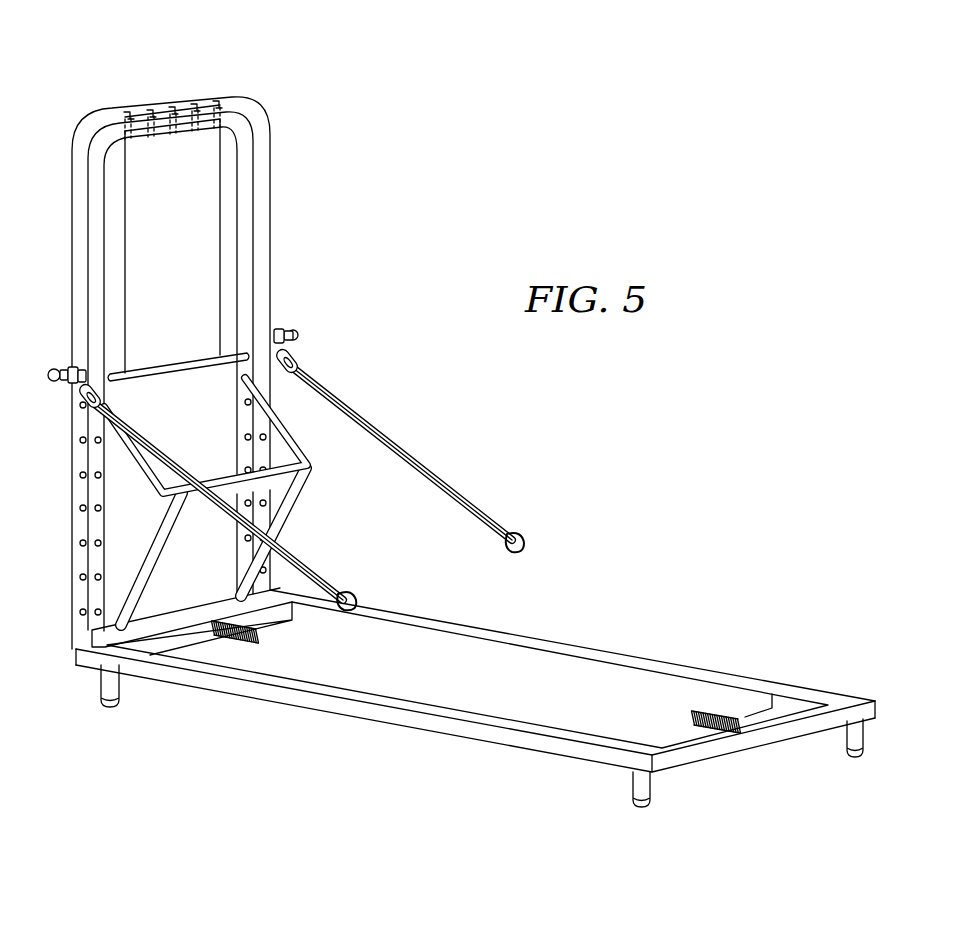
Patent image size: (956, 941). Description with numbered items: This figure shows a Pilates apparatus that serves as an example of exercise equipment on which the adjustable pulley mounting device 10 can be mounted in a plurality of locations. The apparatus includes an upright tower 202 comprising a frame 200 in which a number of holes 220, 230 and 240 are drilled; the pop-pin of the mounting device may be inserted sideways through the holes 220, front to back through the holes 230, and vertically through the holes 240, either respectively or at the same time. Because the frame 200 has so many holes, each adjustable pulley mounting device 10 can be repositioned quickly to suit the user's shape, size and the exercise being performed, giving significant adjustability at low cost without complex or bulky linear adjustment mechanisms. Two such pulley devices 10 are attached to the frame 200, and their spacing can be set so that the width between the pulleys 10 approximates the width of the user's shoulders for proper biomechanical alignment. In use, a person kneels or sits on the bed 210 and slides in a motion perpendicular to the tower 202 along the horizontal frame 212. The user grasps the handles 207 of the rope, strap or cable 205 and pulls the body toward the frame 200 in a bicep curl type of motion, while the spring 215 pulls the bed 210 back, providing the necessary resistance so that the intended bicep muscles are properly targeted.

The adjustable pulley mounting device 10 is at (302, 352).
The frame 200 is at (271, 222).
The tower 202 is at (286, 111).
The rope, strap or cable 205 is at (212, 505).
The handles 207 is at (520, 537).
The bed 210 is at (528, 648).
The horizontal frame 212 is at (418, 733).
The spring 215 is at (712, 712).
The holes 220 is at (80, 509).
The holes 230 is at (101, 476).
The holes 240 is at (197, 98).